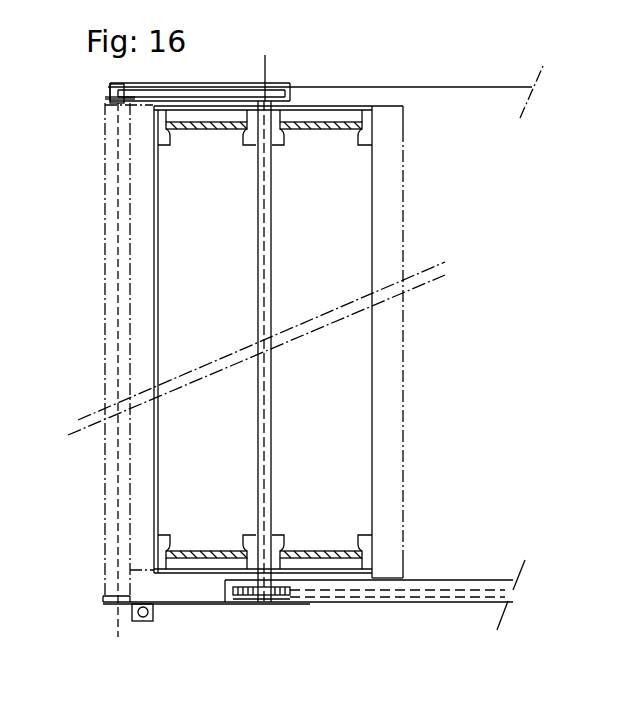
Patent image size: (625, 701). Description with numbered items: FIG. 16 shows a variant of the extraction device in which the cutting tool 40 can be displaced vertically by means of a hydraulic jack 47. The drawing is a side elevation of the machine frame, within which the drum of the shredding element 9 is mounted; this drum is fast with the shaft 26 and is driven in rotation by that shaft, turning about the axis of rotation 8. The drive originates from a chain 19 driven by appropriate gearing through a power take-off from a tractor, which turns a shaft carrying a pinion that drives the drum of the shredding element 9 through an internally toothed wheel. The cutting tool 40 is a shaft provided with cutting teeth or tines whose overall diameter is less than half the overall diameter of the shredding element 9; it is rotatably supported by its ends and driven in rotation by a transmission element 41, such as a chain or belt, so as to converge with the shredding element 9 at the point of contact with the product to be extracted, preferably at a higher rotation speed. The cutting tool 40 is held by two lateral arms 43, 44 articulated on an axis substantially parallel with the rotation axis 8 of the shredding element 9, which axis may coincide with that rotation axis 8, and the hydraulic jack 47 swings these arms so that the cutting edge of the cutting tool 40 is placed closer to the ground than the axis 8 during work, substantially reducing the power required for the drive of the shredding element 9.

The shredding element 9 is at (373, 363).
The shaft 26 is at (272, 424).
The lateral arm 44 is at (205, 83).
The transmission element 41 is at (110, 97).
The cutting tool 40 is at (118, 300).
The lateral arm 43 is at (208, 605).
The hydraulic jack 47 is at (143, 622).
The chain 19 is at (433, 590).
The axis of rotation 8 is at (262, 605).